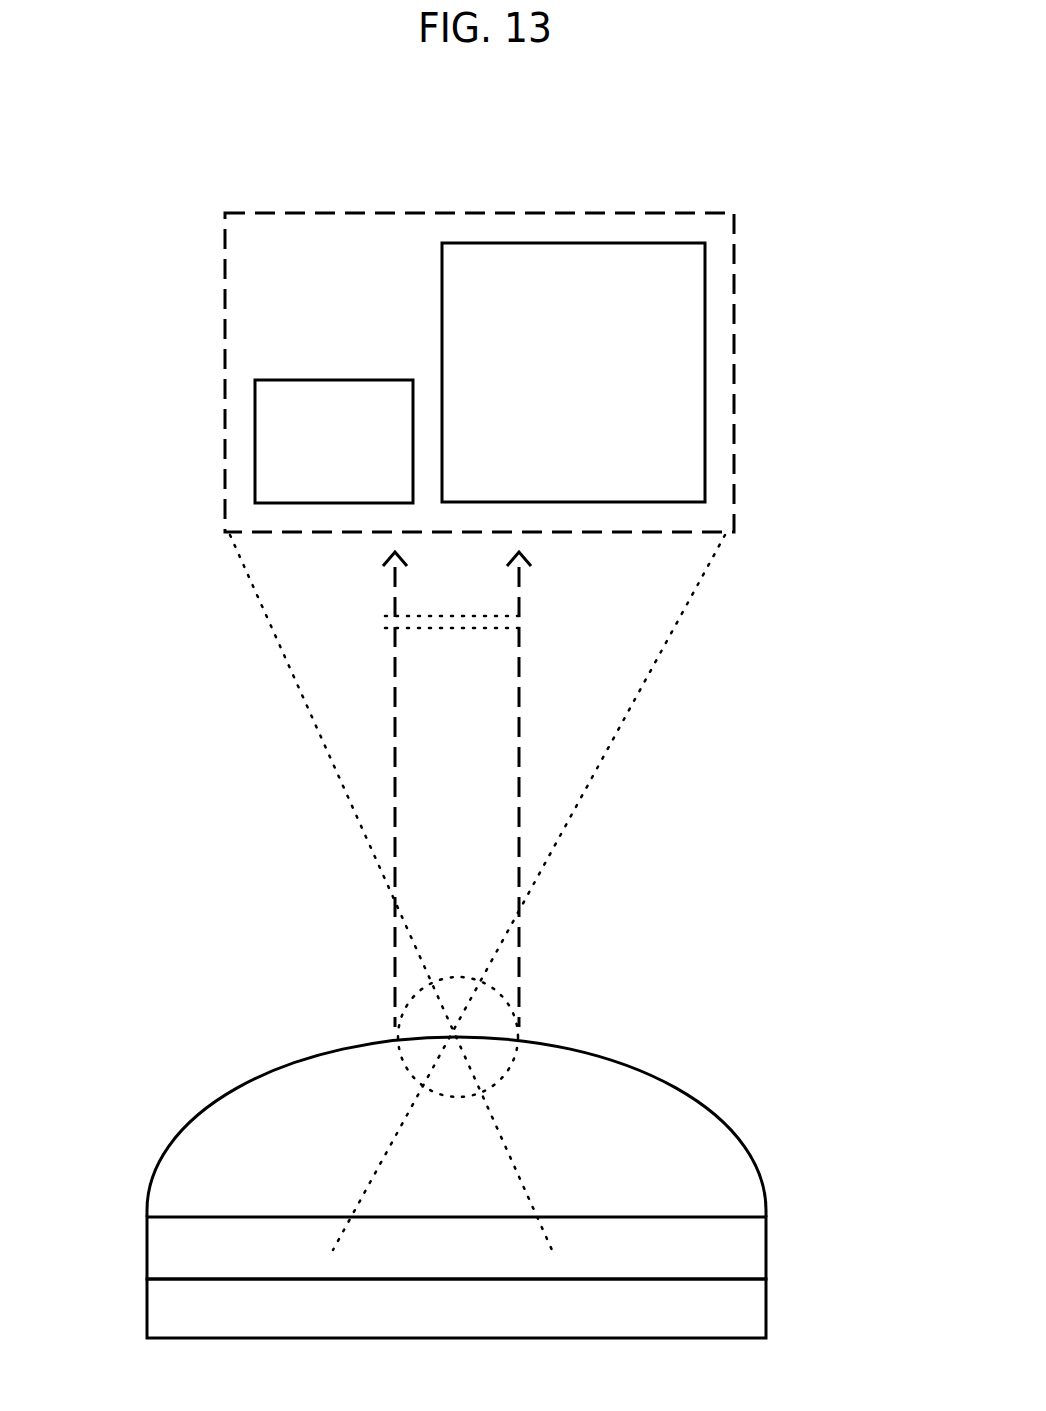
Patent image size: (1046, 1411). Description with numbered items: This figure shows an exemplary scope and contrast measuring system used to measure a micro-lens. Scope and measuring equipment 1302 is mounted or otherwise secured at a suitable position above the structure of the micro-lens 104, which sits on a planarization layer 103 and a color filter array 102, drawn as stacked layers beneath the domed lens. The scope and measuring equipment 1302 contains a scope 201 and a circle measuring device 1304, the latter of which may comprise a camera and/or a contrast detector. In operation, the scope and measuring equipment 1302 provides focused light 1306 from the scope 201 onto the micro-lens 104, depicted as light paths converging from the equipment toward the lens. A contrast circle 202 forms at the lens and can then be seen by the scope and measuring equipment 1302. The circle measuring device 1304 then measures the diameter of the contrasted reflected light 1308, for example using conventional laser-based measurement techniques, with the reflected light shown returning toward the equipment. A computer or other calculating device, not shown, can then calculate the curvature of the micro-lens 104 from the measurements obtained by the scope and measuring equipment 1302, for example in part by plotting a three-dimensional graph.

The scope and measuring equipment 1302 is at (302, 282).
The scope 201 is at (370, 482).
The circle measuring device 1304 is at (620, 485).
The contrasted reflected light 1308 is at (533, 620).
The focused light 1306 is at (342, 780).
The contrast circle 202 is at (500, 995).
The micro-lens 104 is at (690, 1122).
The planarization layer 103 is at (735, 1247).
The color filter array 102 is at (735, 1307).